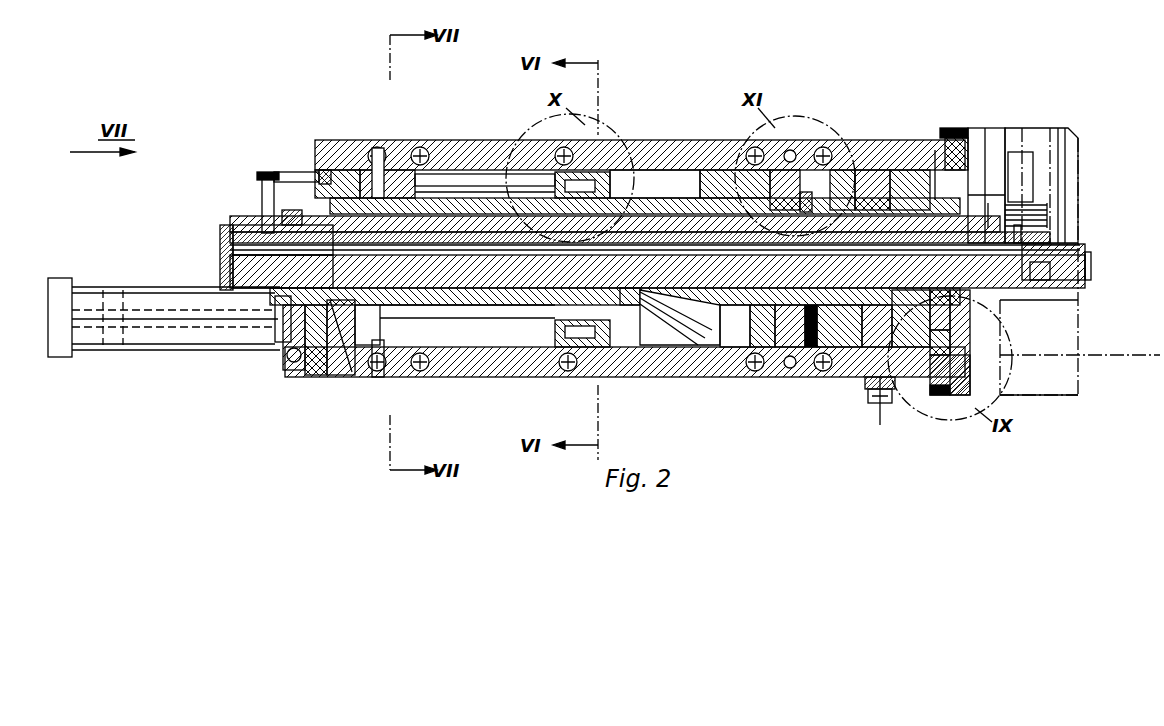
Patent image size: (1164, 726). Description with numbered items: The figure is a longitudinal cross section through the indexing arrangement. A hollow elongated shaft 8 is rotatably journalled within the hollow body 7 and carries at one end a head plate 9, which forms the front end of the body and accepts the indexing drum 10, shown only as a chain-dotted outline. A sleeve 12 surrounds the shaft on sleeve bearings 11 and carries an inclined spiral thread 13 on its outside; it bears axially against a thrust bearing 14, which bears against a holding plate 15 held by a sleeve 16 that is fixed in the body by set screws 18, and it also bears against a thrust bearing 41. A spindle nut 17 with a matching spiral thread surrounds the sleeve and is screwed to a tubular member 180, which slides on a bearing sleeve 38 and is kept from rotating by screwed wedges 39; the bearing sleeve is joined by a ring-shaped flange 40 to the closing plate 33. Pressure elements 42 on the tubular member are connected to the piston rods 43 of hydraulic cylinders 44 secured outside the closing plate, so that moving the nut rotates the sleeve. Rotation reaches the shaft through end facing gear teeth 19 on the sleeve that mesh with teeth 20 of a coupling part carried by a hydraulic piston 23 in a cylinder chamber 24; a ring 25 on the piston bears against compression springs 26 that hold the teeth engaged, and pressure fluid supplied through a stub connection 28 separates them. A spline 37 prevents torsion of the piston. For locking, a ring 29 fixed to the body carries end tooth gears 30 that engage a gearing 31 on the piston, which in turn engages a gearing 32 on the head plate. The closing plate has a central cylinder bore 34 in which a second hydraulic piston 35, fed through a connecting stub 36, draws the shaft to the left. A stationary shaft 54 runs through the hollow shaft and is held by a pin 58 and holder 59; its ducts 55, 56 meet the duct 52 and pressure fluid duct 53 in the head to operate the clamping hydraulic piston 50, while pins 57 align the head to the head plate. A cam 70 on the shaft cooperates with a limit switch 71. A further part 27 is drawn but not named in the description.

The hollow body 7 is at (645, 145).
The hollow elongated shaft 8 is at (1000, 280).
The head plate 9 is at (1000, 325).
The indexing drum 10 is at (1078, 312).
The sleeve bearings 11 is at (770, 170).
The sleeve 12 is at (710, 145).
The inclined spiral thread 13 is at (668, 292).
The thrust bearing 14 is at (740, 305).
The holding plate 15 is at (800, 165).
The sleeve 16 is at (780, 377).
The spindle nut 17 is at (610, 145).
The set screws 18 is at (832, 165).
The end facing gear teeth 19 is at (772, 310).
The teeth 20 is at (807, 193).
The hydraulic piston 23 is at (892, 385).
The cylinder chamber 24 is at (842, 377).
The ring 25 is at (805, 377).
The compression springs 26 is at (845, 168).
The cover 27 is at (942, 133).
The stub connection 28 is at (882, 405).
The ring 29 is at (970, 355).
The end tooth gears 30 is at (950, 345).
The gearing 31 is at (965, 286).
The gearing 32 is at (965, 322).
The closing plate 33 is at (322, 145).
The central cylinder bore 34 is at (318, 375).
The hydraulic piston 35 is at (275, 318).
The connecting stub 36 is at (345, 372).
The spline 37 is at (935, 148).
The bearing sleeve 38 is at (462, 377).
The screwed wedges 39 is at (498, 145).
The ring-shaped flange 40 is at (398, 377).
The thrust bearing 41 is at (570, 377).
The pressure element 42 is at (380, 150).
The piston rod 43 is at (200, 330).
The hydraulic cylinders 44 is at (108, 350).
The hydraulic piston 50 is at (1025, 155).
The duct 52 is at (1022, 232).
The pressure fluid duct 53 is at (1062, 168).
The shaft 54 is at (1082, 265).
The duct 55 is at (1032, 270).
The duct 56 is at (1090, 277).
The pins 57 is at (985, 150).
The pin 58 is at (262, 188).
The holder 59 is at (282, 165).
The cam 70 is at (290, 220).
The limit switch 71 is at (290, 368).
The tubular member 180 is at (458, 145).